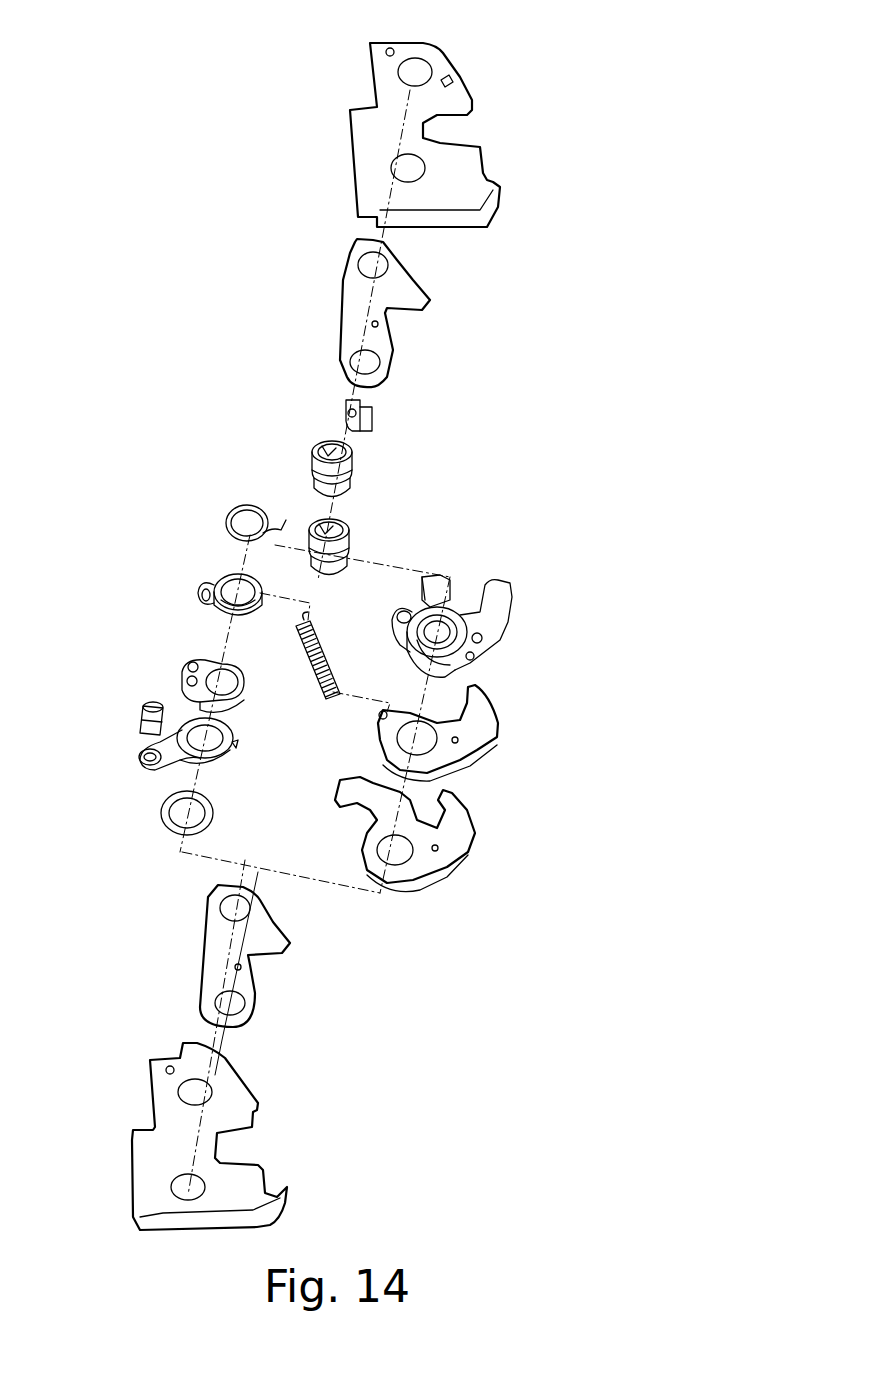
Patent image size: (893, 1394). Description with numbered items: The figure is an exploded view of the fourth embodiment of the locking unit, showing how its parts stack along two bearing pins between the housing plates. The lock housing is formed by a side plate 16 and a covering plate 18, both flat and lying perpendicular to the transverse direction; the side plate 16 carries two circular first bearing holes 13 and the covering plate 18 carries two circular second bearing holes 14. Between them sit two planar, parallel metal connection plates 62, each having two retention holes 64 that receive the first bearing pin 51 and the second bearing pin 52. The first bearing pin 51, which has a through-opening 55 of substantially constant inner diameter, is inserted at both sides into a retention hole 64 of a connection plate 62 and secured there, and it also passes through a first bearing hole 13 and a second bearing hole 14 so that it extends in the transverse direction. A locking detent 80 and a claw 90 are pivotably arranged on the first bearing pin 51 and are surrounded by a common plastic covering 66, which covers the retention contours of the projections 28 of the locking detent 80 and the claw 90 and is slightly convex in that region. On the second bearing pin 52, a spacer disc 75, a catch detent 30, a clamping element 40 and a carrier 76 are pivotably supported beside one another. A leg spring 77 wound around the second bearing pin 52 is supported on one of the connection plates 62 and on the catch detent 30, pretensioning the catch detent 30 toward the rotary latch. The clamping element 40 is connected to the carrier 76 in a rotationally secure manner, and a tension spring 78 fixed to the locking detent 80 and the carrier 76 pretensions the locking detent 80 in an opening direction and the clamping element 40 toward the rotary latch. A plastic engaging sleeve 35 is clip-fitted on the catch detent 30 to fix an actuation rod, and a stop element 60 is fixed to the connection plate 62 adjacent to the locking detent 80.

The first bearing holes 13 is at (197, 1090).
The second bearing holes 14 is at (423, 72).
The side plate 16 is at (145, 1165).
The covering plate 18 is at (365, 150).
The projections 28 is at (475, 702).
The catch detent 30 is at (170, 757).
The engaging sleeve 35 is at (142, 717).
The clamping element 40 is at (180, 667).
The first bearing pin 51 is at (342, 517).
The second bearing pin 52 is at (320, 440).
The through-opening 55 is at (332, 450).
The stop element 60 is at (377, 413).
The connection plates 62 is at (407, 295).
The retention holes 64 is at (350, 252).
The covering 66 is at (503, 605).
The spacer disc 75 is at (160, 813).
The carrier 76 is at (193, 590).
The leg spring 77 is at (235, 505).
The tension spring 78 is at (327, 650).
The locking detent 80 is at (440, 760).
The claw 90 is at (422, 858).